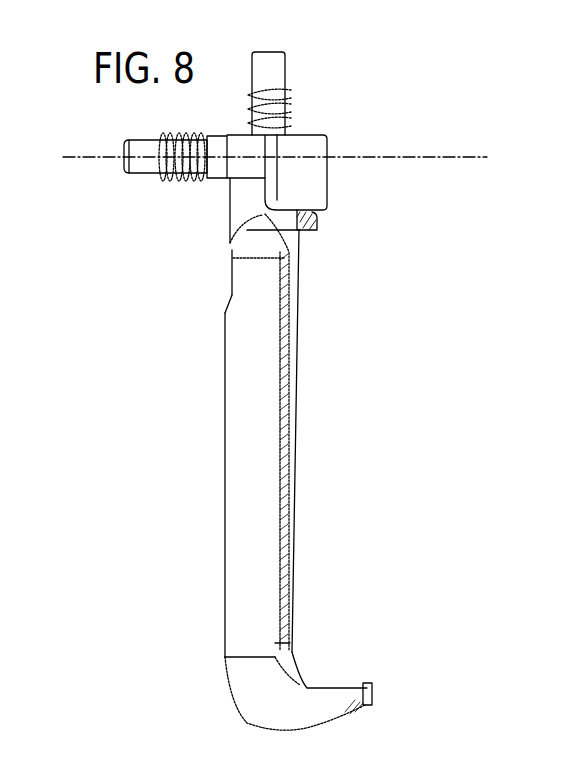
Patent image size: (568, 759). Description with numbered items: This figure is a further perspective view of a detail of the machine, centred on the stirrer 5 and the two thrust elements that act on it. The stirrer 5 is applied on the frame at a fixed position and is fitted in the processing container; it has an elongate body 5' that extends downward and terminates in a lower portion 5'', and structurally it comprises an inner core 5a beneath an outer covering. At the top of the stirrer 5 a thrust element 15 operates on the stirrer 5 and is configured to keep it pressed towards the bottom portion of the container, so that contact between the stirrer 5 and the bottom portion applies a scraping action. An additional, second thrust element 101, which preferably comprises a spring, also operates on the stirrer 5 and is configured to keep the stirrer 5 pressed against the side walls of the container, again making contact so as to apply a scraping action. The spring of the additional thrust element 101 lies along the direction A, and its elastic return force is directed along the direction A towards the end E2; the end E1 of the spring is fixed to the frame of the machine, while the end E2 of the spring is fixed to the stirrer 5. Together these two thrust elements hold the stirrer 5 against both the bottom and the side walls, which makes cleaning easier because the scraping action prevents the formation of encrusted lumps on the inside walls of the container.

The direction A is at (295, 163).
The additional thrust element 101 is at (173, 181).
The end of the spring E1 is at (153, 132).
The end of the spring E2 is at (200, 182).
The thrust element 15 is at (287, 92).
The stirrer 5 is at (239, 432).
The elongate body 5' is at (200, 523).
The lower portion 5'' is at (185, 695).
The inner core 5a is at (260, 447).